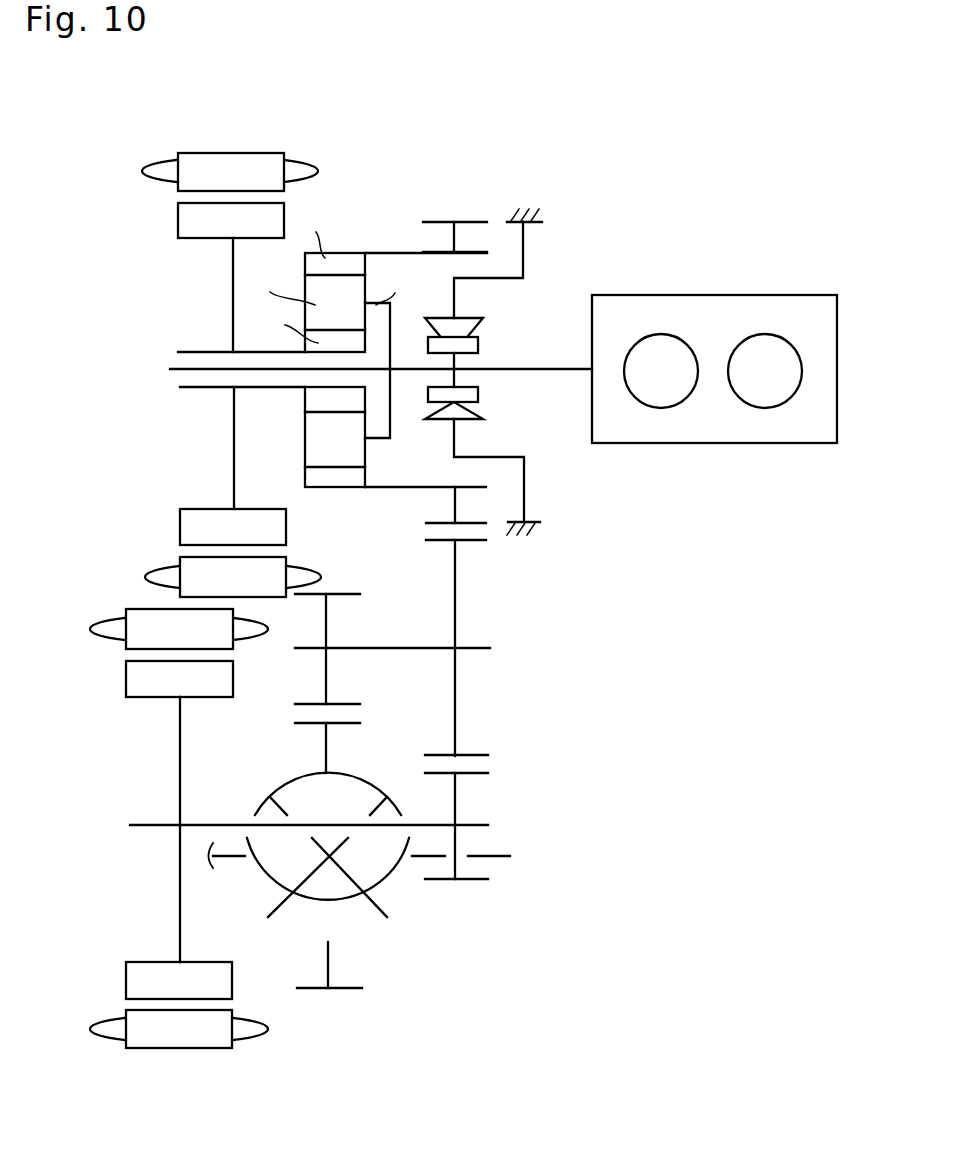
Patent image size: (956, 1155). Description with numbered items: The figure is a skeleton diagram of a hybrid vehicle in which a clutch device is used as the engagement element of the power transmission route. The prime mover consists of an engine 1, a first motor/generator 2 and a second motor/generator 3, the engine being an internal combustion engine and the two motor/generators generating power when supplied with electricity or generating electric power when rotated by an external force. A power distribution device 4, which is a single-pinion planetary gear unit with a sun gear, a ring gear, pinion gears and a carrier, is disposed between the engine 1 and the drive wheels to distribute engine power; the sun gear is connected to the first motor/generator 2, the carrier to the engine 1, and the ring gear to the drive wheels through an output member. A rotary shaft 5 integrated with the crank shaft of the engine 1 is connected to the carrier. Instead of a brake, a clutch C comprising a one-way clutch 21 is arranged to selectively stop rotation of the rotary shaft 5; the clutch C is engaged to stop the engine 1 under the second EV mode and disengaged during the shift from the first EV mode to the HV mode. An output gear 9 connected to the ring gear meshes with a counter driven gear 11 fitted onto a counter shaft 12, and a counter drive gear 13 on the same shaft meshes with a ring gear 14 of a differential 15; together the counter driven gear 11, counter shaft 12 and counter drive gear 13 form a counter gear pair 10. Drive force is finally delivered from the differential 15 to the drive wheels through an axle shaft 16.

The engine 1 is at (770, 295).
The first motor/generator 2 is at (145, 141).
The second motor/generator 3 is at (94, 613).
The power distribution device 4 is at (358, 228).
The rotary shaft 5 is at (535, 372).
The output gear 9 is at (430, 518).
The counter gear pair 10 is at (511, 628).
The counter driven gear 11 is at (477, 543).
The counter shaft 12 is at (395, 645).
The counter drive gear 13 is at (348, 703).
The ring gear 14 is at (348, 724).
The differential 15 is at (403, 905).
The axle shaft 16 is at (497, 852).
The one-way clutch 21 is at (497, 326).
The clutch C is at (482, 247).